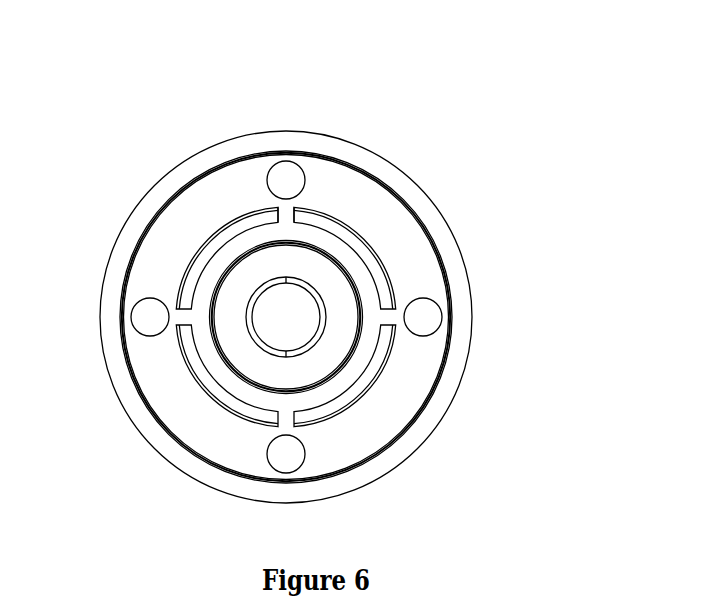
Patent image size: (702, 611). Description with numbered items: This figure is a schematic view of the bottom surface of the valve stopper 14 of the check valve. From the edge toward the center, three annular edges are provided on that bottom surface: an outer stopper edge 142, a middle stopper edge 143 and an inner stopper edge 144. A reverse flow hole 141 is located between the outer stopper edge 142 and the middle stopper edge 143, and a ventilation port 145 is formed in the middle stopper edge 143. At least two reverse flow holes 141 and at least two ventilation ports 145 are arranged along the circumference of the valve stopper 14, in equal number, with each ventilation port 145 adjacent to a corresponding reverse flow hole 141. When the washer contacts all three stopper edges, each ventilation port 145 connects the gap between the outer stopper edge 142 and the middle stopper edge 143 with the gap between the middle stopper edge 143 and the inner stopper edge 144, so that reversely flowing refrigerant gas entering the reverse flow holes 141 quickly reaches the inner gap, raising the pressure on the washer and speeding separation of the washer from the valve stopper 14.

The valve stopper 14 is at (142, 107).
The reverse flow hole 141 is at (441, 327).
The outer stopper edge 142 is at (430, 423).
The middle stopper edge 143 is at (315, 417).
The inner stopper edge 144 is at (247, 358).
The ventilation port 145 is at (287, 207).